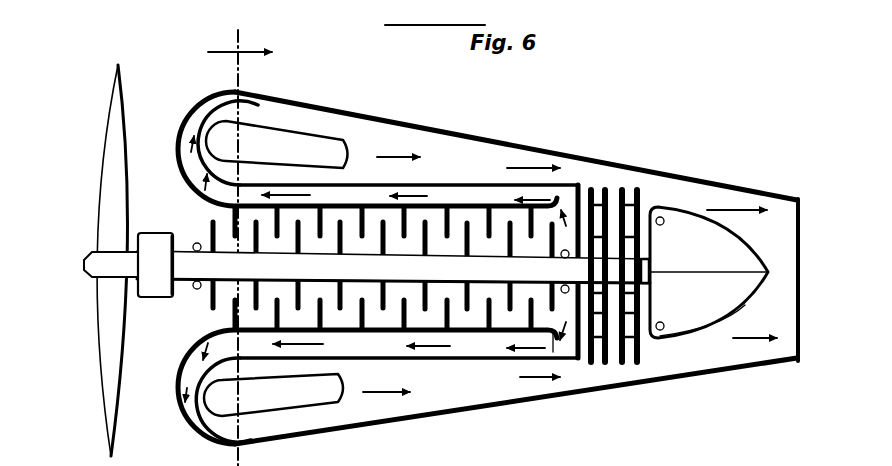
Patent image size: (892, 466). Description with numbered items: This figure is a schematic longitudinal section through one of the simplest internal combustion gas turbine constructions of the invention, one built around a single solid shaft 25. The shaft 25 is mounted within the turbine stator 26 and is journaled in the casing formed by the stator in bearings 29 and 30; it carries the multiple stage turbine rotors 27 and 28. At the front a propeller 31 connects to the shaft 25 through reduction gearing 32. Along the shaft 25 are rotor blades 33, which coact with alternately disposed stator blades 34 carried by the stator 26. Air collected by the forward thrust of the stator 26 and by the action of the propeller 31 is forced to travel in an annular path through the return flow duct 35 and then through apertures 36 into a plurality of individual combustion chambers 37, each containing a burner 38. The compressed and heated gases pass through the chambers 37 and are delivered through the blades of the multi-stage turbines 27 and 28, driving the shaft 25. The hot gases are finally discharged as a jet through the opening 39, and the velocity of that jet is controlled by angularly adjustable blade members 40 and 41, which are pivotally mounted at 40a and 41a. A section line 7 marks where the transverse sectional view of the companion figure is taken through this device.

The section line 7— 7 is at (240, 235).
The single solid shaft 25 is at (257, 268).
The turbine stator 26 is at (485, 352).
The multiple stage turbine rotor 27 is at (597, 193).
The multiple stage turbine rotor 28 is at (645, 210).
The bearing 29 is at (197, 285).
The bearing 30 is at (553, 300).
The propeller 31 is at (113, 114).
The reduction gearing 32 is at (150, 232).
The rotor blades 33 is at (470, 215).
The stator blades 34 is at (345, 200).
The return flow duct 35 is at (436, 198).
The apertures 36 is at (200, 124).
The combustion chambers 37 is at (400, 140).
The burner 38 is at (280, 142).
The opening 39 is at (775, 213).
The angularly adjustable blade member 40 is at (700, 230).
The pivot mounting 40a is at (664, 218).
The angularly adjustable blade member 41 is at (705, 322).
The pivot mounting 41a is at (660, 330).